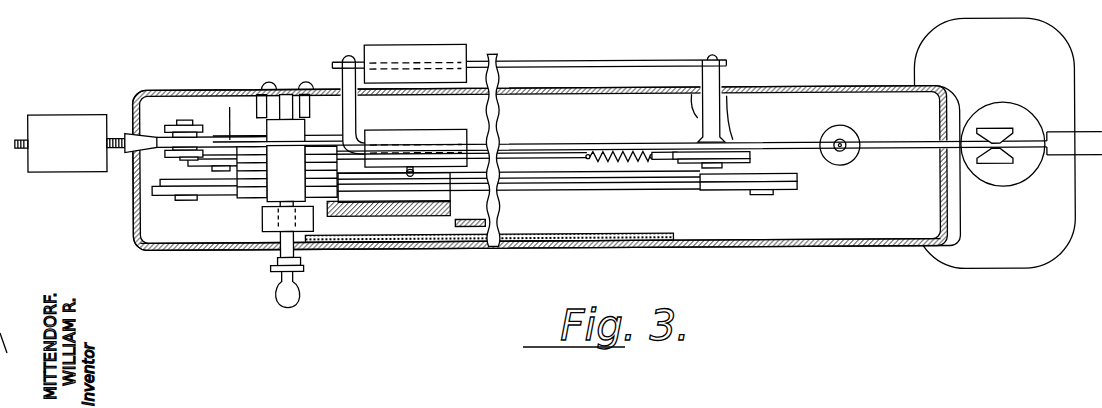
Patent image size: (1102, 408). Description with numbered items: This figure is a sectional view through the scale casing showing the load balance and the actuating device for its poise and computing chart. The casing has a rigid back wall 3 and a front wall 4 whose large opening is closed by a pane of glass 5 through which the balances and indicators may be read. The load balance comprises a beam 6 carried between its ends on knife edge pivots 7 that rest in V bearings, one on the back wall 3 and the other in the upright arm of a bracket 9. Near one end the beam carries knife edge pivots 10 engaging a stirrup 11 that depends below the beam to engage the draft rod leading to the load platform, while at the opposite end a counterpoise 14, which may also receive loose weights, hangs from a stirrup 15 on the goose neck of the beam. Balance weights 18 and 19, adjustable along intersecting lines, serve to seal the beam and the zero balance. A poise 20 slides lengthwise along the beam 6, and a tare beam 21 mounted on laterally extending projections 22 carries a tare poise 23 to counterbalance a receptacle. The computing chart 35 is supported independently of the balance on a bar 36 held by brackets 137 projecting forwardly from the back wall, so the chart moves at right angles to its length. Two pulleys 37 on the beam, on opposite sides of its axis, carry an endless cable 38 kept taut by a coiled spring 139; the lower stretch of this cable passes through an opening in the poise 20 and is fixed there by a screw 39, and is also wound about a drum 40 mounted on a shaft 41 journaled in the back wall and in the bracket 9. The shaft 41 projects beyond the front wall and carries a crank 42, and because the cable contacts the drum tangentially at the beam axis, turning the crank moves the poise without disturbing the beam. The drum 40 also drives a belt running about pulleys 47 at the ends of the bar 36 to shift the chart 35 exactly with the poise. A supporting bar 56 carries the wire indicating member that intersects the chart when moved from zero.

The back wall 3 is at (830, 89).
The front wall 4 is at (202, 251).
The pane of glass 5 is at (388, 242).
The beam 6 is at (777, 147).
The knife edge pivots 7 is at (285, 105).
The bracket 9 is at (262, 221).
The knife edge pivots 10 is at (186, 117).
The stirrup 11 is at (172, 120).
The counterpoise 14 is at (995, 168).
The stirrup 15 is at (995, 131).
The balance weight 18 is at (62, 127).
The balance weight 19 is at (850, 139).
The poise 20 is at (437, 128).
The tare beam 21 is at (588, 61).
The laterally extending projections 22 is at (356, 116).
The poise 23 is at (440, 50).
The computing chart 35 is at (417, 216).
The bar 36 is at (593, 191).
The pulleys 37 is at (750, 164).
The cable 38 is at (538, 154).
The screw 39 is at (406, 175).
The drum 40 is at (250, 197).
The shaft 41 is at (275, 262).
The crank 42 is at (282, 284).
The pulleys 47 is at (797, 193).
The supporting bar 56 is at (472, 227).
The brackets 137 is at (229, 110).
The coiled spring 139 is at (620, 152).